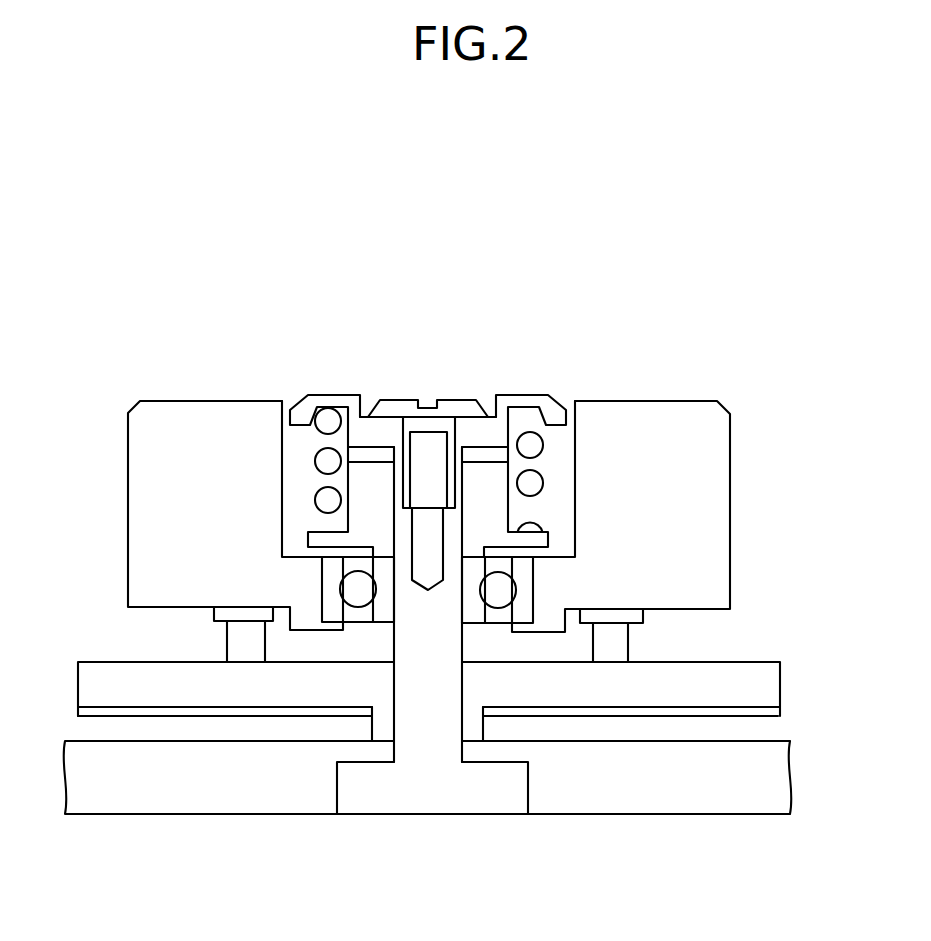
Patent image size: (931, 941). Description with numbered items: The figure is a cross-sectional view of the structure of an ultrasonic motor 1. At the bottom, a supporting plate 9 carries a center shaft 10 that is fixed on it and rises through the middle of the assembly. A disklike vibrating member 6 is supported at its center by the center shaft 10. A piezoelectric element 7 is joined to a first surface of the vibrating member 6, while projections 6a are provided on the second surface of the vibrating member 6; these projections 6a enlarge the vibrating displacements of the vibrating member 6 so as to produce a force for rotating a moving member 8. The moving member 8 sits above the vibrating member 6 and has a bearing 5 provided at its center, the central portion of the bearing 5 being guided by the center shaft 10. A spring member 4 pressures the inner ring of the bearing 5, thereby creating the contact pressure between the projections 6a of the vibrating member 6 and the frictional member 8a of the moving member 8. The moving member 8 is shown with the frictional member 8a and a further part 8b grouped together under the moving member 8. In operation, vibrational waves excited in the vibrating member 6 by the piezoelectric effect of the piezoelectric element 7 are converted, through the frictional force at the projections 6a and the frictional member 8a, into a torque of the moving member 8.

The ultrasonic motor 1 is at (668, 278).
The spring member 4 is at (530, 483).
The bearing 5 is at (502, 590).
The vibrating member 6 is at (208, 690).
The projections 6a is at (240, 650).
The piezoelectric element 7 is at (282, 710).
The moving member 8 is at (429, 441).
The frictional member 8a is at (250, 430).
The holder plate 8b is at (243, 612).
The supporting plate 9 is at (610, 800).
The center shaft 10 is at (435, 800).